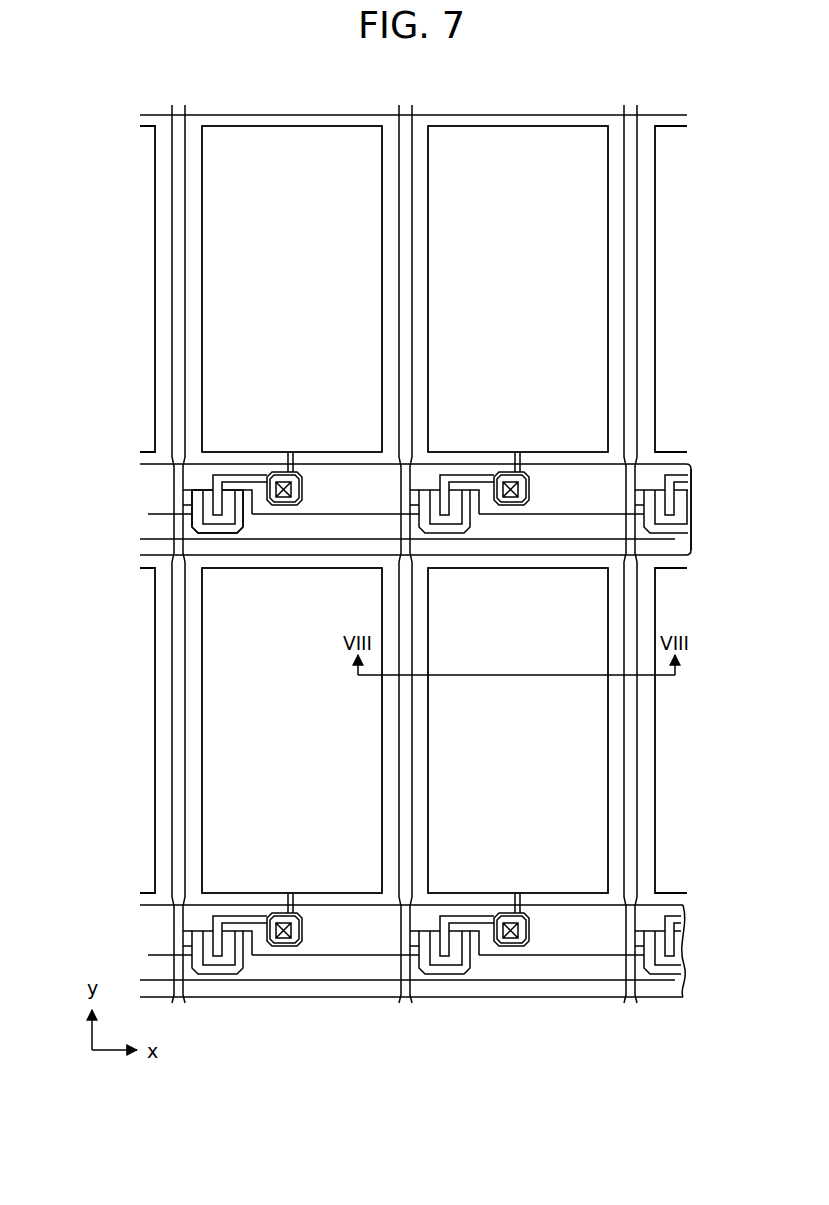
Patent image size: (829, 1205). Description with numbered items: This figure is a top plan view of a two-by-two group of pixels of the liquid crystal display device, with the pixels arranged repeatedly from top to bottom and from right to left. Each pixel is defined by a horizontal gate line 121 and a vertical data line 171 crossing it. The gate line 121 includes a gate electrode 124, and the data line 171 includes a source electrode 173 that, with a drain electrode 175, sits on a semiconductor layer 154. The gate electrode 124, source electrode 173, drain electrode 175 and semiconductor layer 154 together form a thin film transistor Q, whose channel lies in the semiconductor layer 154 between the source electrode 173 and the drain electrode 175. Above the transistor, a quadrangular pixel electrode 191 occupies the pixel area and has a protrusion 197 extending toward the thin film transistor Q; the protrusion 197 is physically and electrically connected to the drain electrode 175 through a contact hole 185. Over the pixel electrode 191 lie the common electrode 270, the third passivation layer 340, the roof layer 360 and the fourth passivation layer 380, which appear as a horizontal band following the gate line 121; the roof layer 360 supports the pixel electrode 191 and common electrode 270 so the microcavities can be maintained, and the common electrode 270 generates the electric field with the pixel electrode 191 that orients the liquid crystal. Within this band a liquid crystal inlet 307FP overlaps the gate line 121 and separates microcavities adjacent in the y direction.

The gate line 121 is at (158, 525).
The gate electrode 124 is at (185, 490).
The semiconductor layer 154 is at (244, 492).
The data line 171 is at (178, 314).
The source electrode 173 is at (199, 543).
The drain electrode 175 is at (214, 478).
The contact hole 185 is at (301, 503).
The pixel electrode 191 is at (202, 186).
The protrusion 197 is at (303, 483).
The common electrode 270 is at (444, 556).
The third passivation layer 340 is at (444, 556).
The roof layer 360 is at (444, 556).
The fourth passivation layer 380 is at (646, 466).
The liquid crystal inlet 307FP is at (691, 511).
The thin film transistor Q is at (183, 548).